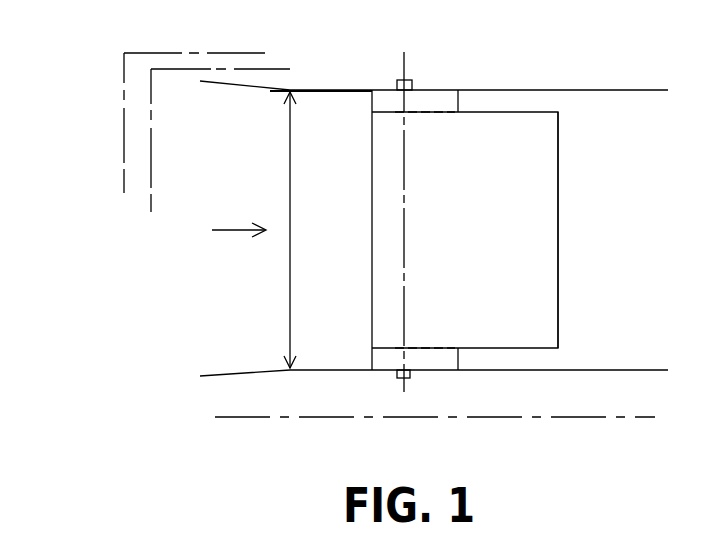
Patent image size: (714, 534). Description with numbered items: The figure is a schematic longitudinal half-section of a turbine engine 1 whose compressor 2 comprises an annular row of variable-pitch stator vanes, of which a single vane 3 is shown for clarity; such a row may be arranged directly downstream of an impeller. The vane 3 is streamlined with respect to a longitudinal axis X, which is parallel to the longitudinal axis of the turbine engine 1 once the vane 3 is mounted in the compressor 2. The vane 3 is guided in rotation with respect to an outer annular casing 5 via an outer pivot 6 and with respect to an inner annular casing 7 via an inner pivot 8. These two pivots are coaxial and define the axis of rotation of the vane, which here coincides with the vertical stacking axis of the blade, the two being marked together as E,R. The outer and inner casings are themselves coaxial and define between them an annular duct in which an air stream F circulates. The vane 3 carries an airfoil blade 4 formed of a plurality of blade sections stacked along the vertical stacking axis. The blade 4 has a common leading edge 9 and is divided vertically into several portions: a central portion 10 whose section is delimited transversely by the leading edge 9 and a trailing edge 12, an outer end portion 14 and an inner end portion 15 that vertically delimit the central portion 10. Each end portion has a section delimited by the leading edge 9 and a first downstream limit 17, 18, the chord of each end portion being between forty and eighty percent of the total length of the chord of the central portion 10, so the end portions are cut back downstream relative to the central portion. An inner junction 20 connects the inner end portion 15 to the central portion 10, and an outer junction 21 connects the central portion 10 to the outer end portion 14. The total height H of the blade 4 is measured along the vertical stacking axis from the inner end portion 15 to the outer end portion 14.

The turbine engine 1 is at (124, 95).
The compressor 2 is at (151, 163).
The variable-pitch stator vane 3 is at (600, 207).
The airfoil blade 4 is at (372, 258).
The outer annular casing 5 is at (557, 88).
The outer pivot 6 is at (397, 84).
The inner annular casing 7 is at (558, 370).
The inner pivot 8 is at (410, 375).
The leading edge 9 is at (372, 175).
The central portion 10 is at (388, 292).
The trailing edge 12 is at (560, 258).
The outer end portion 14 is at (390, 100).
The inner end portion 15 is at (381, 364).
The first downstream limit 17 is at (484, 102).
The first downstream limit 18 is at (472, 355).
The inner junction 20 is at (388, 347).
The outer junction 21 is at (384, 112).
The vertical stacking axis and axis of rotation E,R is at (412, 83).
The air stream F is at (227, 232).
The total height of the blade H is at (290, 190).
The longitudinal axis X is at (546, 419).